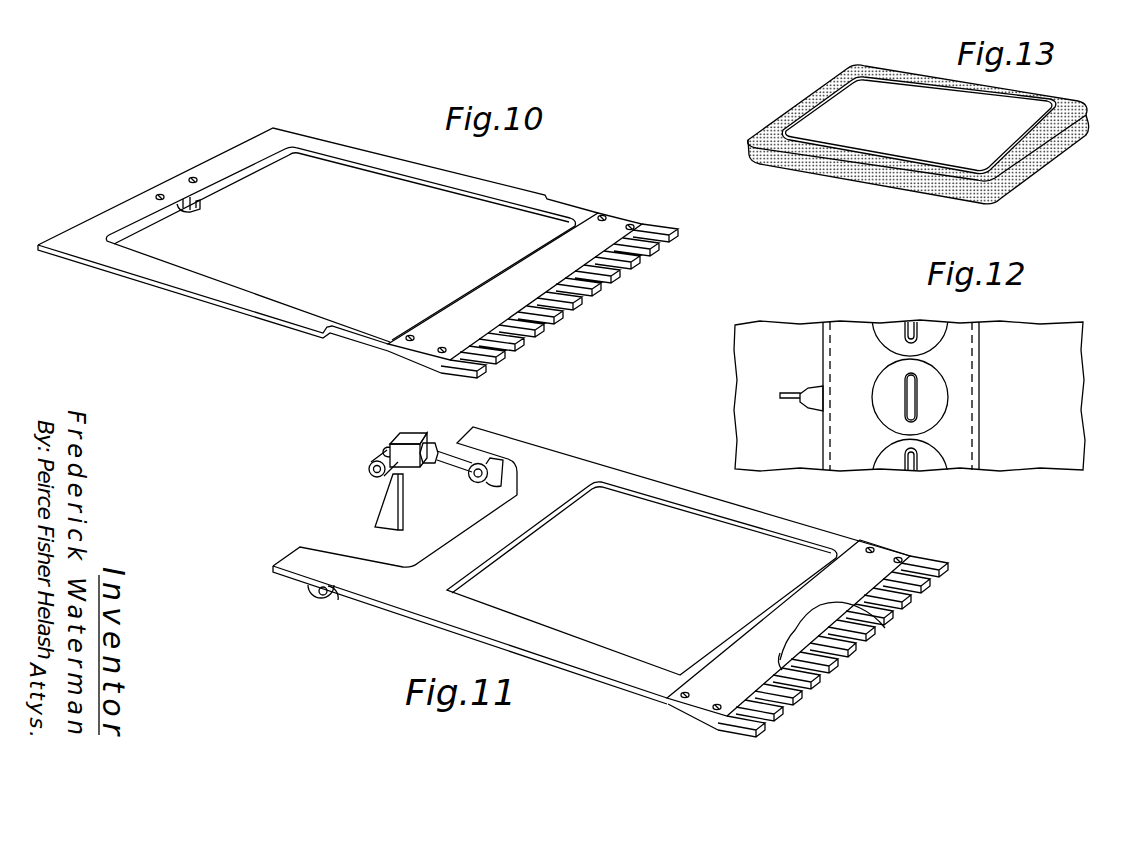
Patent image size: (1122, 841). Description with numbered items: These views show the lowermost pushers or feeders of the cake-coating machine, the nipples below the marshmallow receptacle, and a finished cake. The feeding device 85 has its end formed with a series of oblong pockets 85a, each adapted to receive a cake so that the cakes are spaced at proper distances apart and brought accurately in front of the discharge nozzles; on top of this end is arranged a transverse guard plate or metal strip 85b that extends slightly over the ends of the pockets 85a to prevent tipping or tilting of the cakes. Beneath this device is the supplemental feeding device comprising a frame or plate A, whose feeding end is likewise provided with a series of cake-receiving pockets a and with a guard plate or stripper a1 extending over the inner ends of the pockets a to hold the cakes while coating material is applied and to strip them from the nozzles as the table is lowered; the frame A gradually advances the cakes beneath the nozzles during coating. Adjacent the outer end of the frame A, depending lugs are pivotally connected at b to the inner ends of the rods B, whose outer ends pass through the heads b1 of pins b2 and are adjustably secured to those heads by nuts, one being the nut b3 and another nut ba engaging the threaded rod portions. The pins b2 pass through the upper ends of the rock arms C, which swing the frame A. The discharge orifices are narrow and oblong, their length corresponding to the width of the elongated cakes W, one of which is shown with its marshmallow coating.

In FIG. 10, the feeding device 85 is at (508, 203).
In FIG. 10, the oblong pockets 85a is at (574, 324).
In FIG. 10, the transverse guard plate or metal strip 85b is at (515, 293).
In FIG. 11, the frame or plate A is at (795, 537).
In FIG. 11, the cake-receiving pockets a is at (885, 613).
In FIG. 12, the cake-receiving pockets a is at (915, 462).
In FIG. 11, the guard plate or stripper a1 is at (752, 635).
In FIG. 11, the pivotal connection b is at (486, 483).
In FIG. 11, the heads of pins b1 is at (409, 441).
In FIG. 11, the pins b2 is at (370, 476).
In FIG. 11, the nut b3 is at (395, 433).
In FIG. 11, the nut ba is at (434, 449).
In FIG. 11, the rods B is at (452, 467).
In FIG. 11, the rock arms C is at (405, 517).
In FIG. 13, the cakes W is at (925, 134).